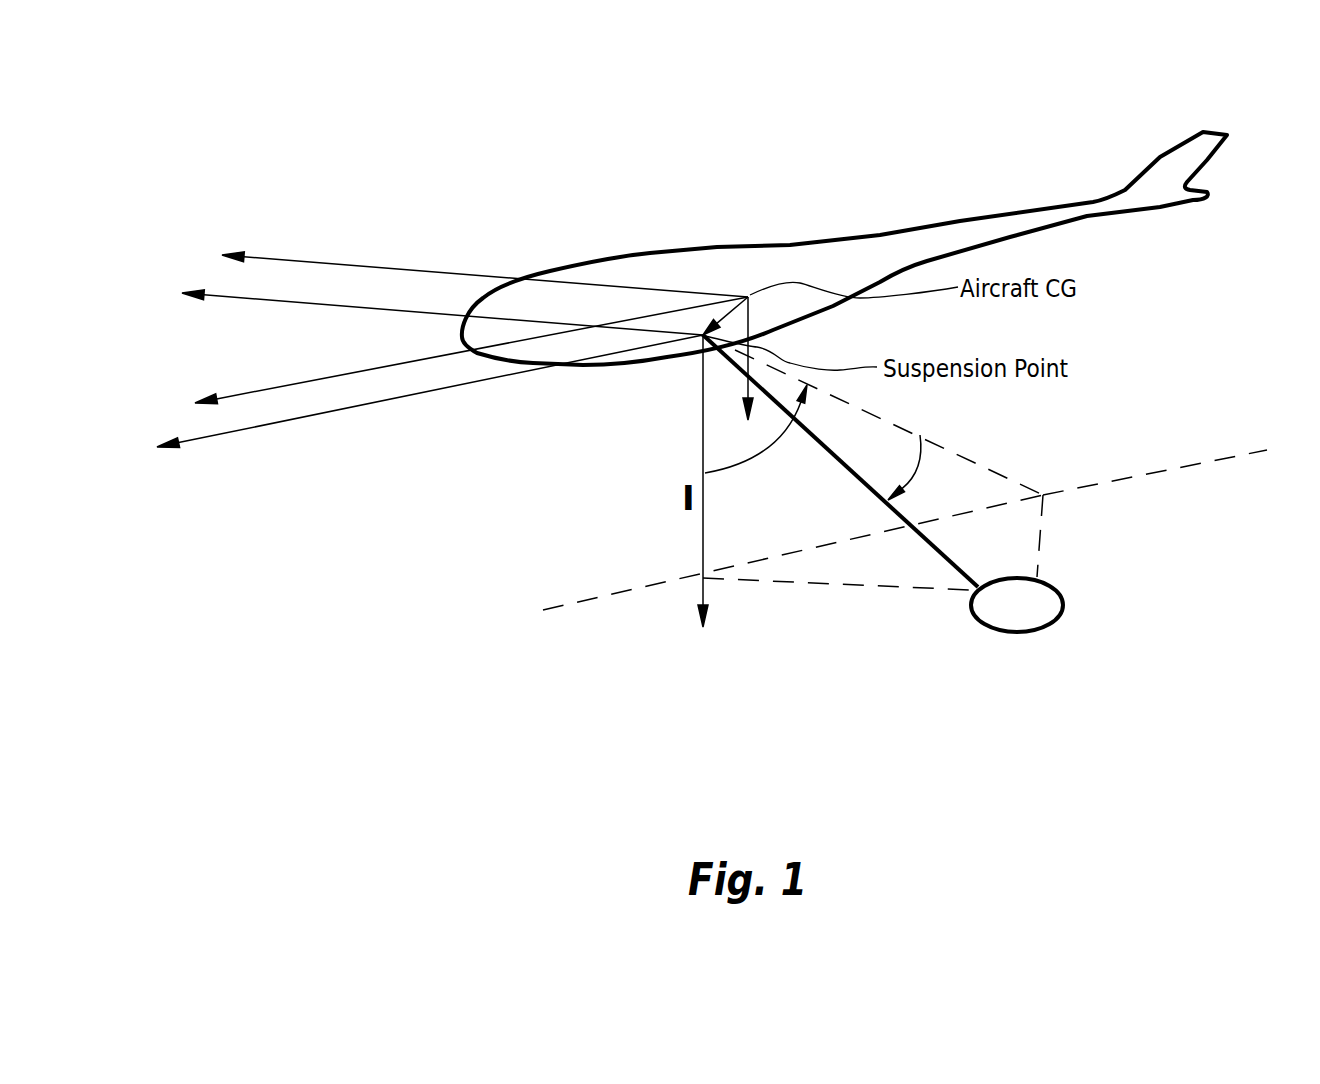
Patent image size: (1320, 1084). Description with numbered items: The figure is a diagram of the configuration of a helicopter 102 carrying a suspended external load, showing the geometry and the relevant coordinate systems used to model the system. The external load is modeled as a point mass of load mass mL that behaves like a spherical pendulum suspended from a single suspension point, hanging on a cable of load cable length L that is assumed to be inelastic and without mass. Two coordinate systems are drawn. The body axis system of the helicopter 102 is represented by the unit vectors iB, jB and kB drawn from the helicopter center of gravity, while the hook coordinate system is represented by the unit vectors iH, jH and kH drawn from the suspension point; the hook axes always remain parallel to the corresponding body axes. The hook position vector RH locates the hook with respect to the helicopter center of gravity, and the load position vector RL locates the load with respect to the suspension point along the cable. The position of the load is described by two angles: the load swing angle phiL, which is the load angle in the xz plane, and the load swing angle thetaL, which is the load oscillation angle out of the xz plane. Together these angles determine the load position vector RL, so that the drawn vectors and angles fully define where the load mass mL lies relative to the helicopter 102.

The helicopter 102 is at (790, 243).
The load cable length L is at (840, 461).
The load mass mL is at (1063, 610).
The hook position vector RH is at (727, 313).
The load position vector RL is at (834, 415).
The body axis unit vector j JB is at (485, 275).
The hook coordinate system unit vector j_H JH is at (442, 320).
The body axis unit vector i IB is at (451, 361).
The hook coordinate system unit vector i_H IH is at (427, 416).
The body axis unit vector k kB is at (744, 376).
The hook coordinate system unit vector k_H kH is at (730, 506).
The load swing angle phi_L phiL is at (756, 445).
The load swing angle theta_L thetaL is at (888, 466).